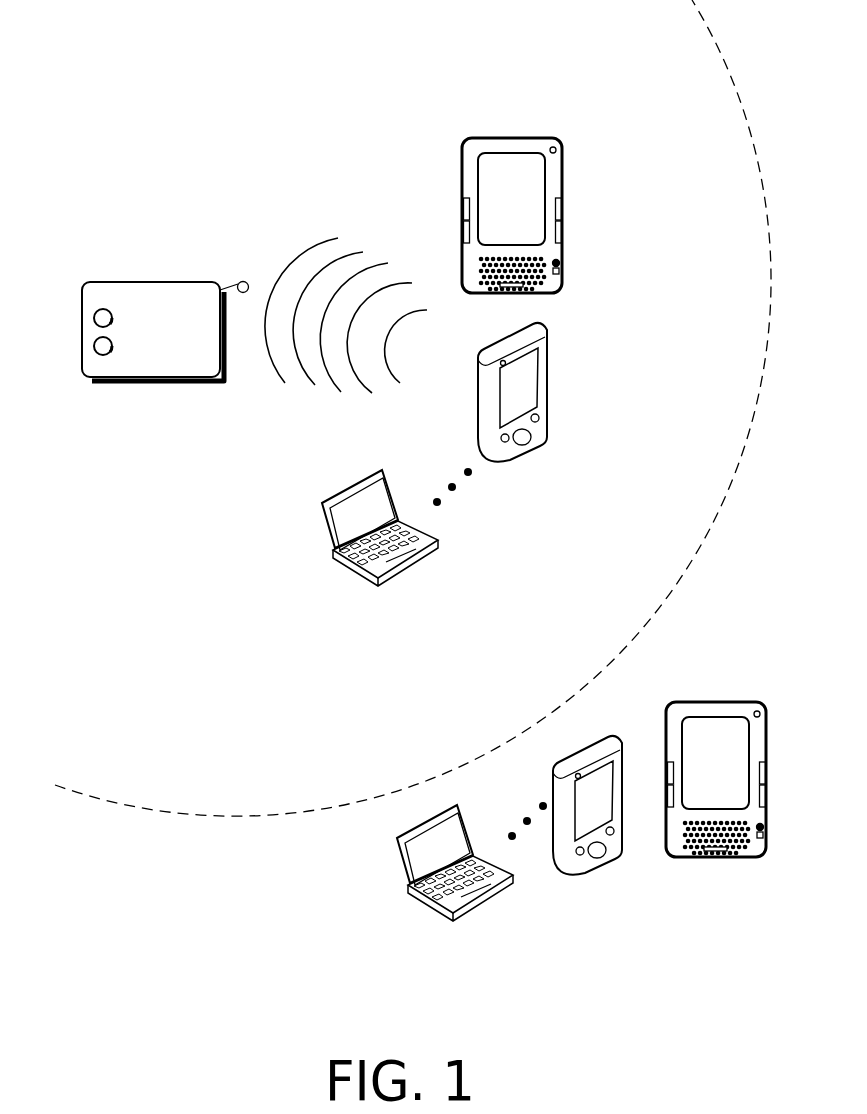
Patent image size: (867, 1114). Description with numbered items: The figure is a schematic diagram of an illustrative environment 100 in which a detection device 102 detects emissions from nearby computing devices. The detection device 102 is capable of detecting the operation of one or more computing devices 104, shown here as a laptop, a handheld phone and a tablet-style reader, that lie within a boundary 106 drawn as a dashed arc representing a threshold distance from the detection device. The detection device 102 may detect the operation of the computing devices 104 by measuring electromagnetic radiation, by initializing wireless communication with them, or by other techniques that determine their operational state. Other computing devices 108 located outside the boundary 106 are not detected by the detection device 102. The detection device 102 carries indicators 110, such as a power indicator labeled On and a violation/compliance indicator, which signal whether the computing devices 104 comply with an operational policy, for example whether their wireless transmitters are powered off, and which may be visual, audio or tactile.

The environment 100 is at (161, 40).
The detection device 102 is at (153, 298).
The computing devices 104 is at (606, 359).
The boundary 106 is at (162, 811).
The other computing devices 108 is at (631, 932).
The indicators 110 is at (156, 294).